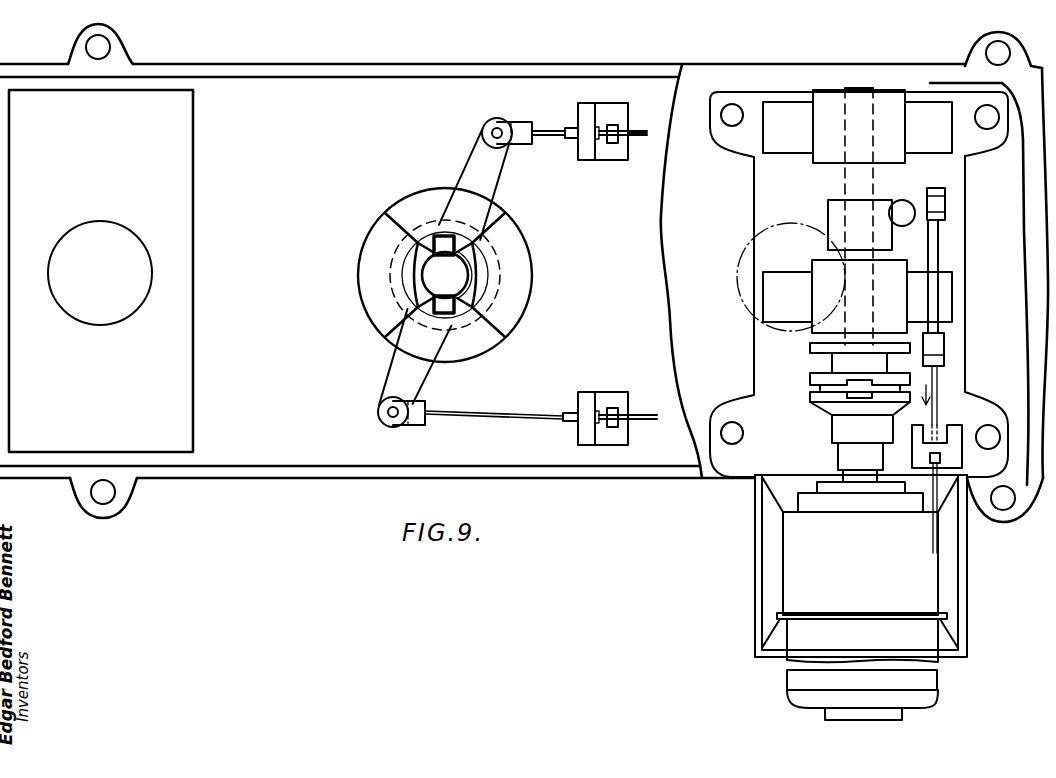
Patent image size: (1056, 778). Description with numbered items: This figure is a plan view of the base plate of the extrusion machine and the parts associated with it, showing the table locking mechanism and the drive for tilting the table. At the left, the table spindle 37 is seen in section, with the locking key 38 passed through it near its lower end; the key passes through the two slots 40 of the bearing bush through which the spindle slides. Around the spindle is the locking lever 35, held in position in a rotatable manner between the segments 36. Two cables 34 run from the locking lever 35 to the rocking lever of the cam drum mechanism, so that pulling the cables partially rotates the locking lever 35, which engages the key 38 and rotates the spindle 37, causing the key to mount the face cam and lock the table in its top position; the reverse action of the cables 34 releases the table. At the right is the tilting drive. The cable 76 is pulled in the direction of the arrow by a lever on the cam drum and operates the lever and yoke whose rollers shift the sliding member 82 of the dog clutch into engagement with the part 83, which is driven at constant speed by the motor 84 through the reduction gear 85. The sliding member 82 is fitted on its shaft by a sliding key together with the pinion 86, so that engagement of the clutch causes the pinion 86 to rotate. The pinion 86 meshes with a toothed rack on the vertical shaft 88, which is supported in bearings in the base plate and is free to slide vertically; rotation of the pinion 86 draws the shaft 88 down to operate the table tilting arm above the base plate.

The cable 34 is at (546, 135).
The locking lever 35 is at (392, 378).
The segments 36 is at (385, 235).
The table spindle 37 is at (402, 263).
The locking key 38 is at (503, 253).
The slots 40 is at (430, 246).
The cable 76 is at (937, 386).
The sliding member of dog clutch 82 is at (812, 378).
The driven part of dog clutch 83 is at (810, 397).
The motor 84 is at (805, 654).
The reduction gear 85 is at (790, 570).
The pinion 86 is at (835, 212).
The vertical shaft 88 is at (902, 200).